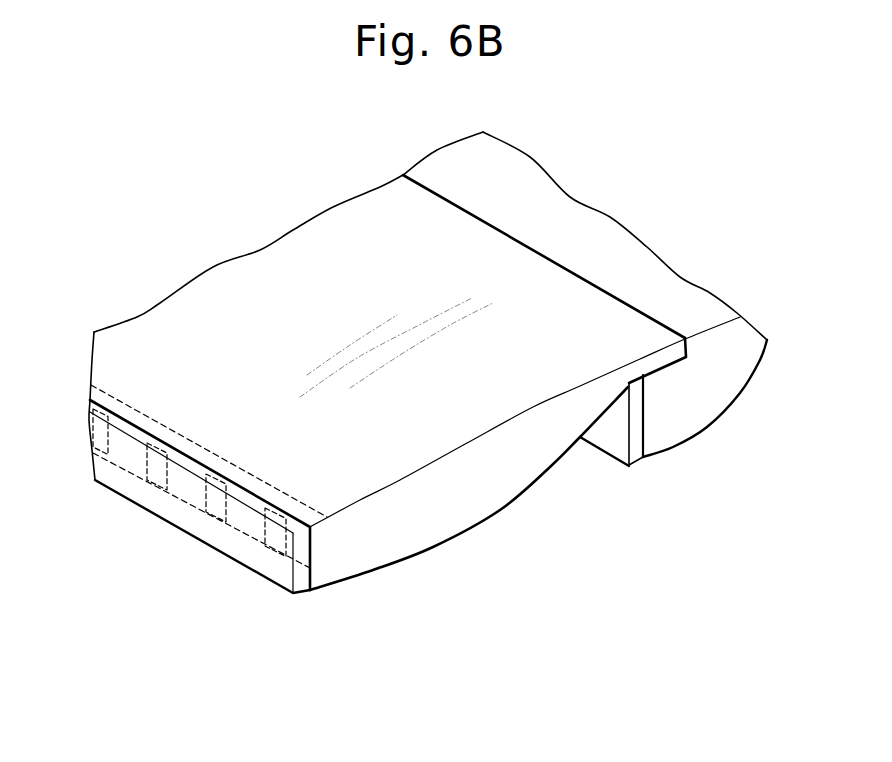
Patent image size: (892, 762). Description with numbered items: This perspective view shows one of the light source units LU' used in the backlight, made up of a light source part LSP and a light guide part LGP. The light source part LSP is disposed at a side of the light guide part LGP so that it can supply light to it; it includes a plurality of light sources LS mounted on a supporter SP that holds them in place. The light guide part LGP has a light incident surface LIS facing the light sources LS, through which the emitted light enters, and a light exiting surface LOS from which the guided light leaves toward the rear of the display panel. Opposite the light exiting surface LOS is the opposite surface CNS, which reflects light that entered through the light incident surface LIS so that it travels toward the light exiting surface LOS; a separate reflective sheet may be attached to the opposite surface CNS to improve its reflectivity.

The light output surface LOS is at (397, 263).
The curved surface CNS is at (563, 459).
The light incident surface LIS is at (644, 416).
The light guide plate LGP is at (368, 555).
The light source part LSP is at (342, 637).
The light source LS is at (273, 542).
The substrate SP is at (302, 556).
The light unit LU' is at (336, 693).